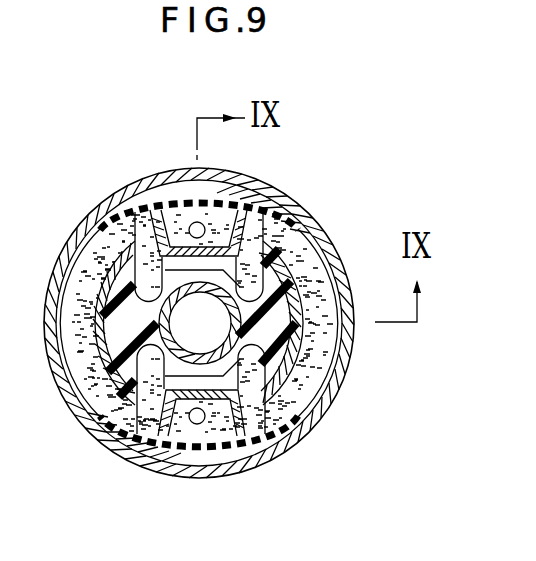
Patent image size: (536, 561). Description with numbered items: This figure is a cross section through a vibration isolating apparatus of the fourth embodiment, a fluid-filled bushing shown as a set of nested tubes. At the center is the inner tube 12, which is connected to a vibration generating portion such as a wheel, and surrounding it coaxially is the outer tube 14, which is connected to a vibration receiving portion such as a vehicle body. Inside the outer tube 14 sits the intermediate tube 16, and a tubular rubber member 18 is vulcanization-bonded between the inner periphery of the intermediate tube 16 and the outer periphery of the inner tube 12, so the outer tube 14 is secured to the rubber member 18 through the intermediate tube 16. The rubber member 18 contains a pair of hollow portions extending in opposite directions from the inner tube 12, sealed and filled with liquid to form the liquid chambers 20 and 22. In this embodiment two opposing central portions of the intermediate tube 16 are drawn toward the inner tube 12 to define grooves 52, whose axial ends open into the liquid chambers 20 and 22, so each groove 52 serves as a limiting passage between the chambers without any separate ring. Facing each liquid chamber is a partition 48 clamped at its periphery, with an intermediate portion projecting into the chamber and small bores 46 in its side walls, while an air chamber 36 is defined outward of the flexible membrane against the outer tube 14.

The inner tube 12 is at (199, 295).
The outer tube 14 is at (122, 200).
The intermediate tube 16 is at (313, 227).
The rubber member 18 is at (303, 300).
The liquid chamber 20 is at (259, 274).
The liquid chamber 22 is at (262, 388).
The air chamber 36 is at (167, 190).
The small bores 46 is at (216, 200).
The partition 48 is at (136, 237).
The groove 52 is at (313, 338).